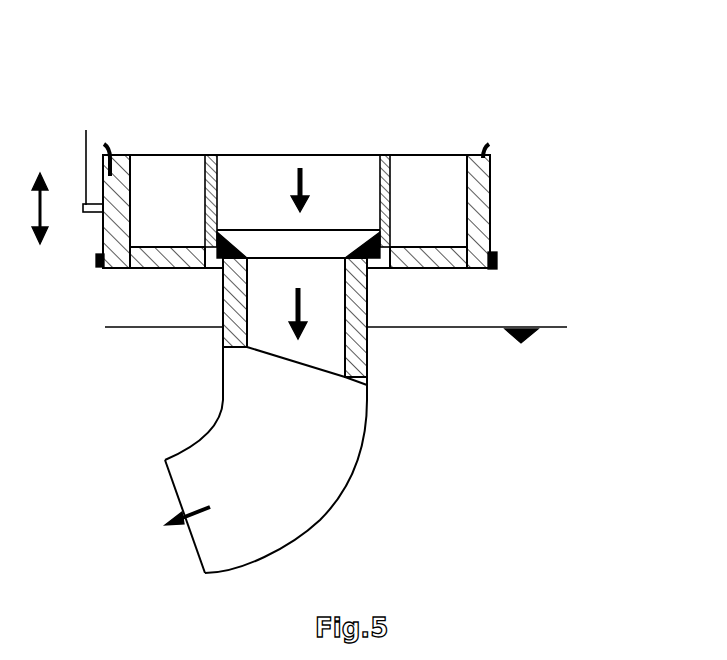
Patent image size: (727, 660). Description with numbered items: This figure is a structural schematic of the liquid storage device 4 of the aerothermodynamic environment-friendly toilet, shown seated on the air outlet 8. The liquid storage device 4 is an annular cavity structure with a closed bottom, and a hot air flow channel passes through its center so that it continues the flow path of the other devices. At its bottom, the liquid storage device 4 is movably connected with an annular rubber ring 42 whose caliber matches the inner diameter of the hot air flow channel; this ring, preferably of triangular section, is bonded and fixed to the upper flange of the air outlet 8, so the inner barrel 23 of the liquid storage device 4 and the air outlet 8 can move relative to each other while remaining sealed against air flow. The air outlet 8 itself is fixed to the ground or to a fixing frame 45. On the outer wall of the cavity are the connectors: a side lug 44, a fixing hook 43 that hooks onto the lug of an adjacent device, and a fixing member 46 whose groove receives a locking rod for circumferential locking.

The liquid storage device 4 is at (133, 156).
The air outlet 8 is at (365, 360).
The inner barrel 23 is at (219, 156).
The annular rubber ring 42 is at (377, 240).
The fixing hook 43 is at (489, 156).
The side lug 44 is at (492, 258).
The fixing frame 45 is at (520, 327).
The fixing member 46 is at (86, 132).